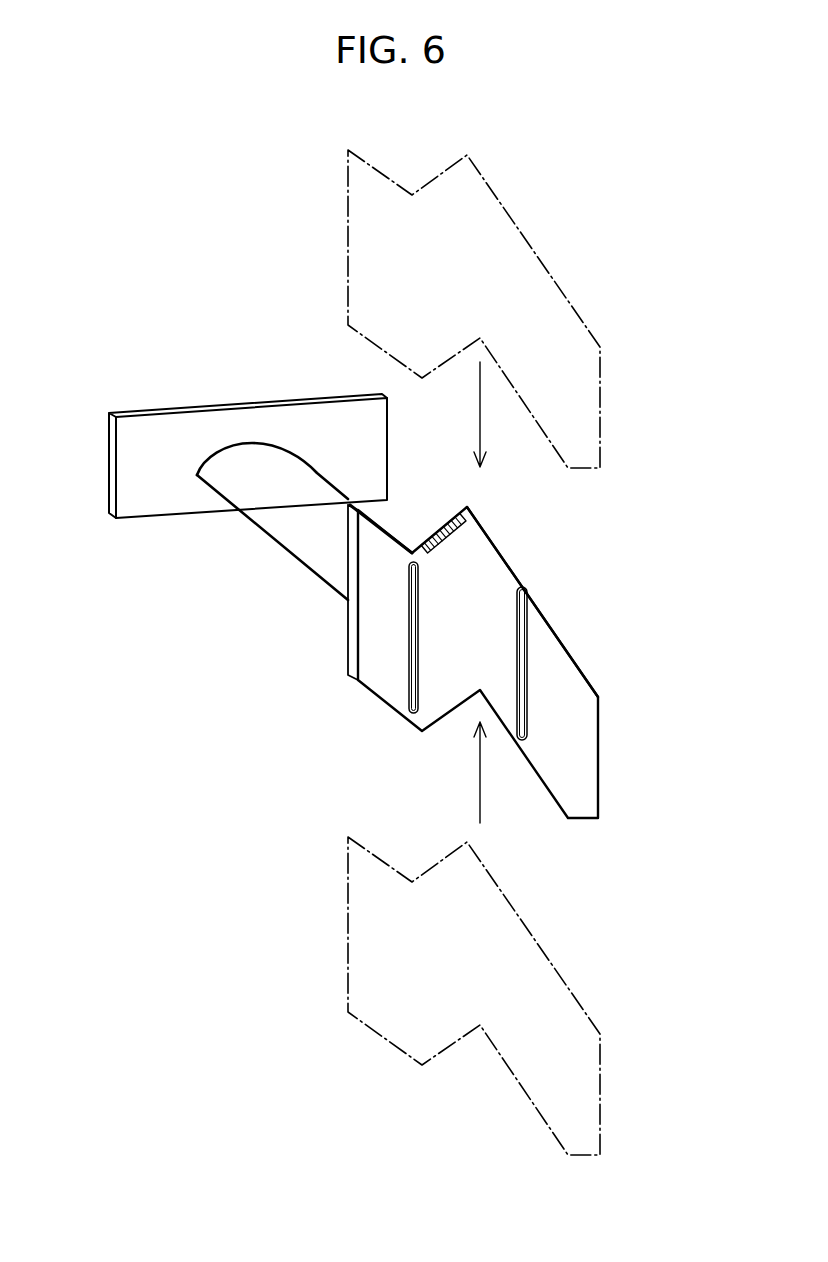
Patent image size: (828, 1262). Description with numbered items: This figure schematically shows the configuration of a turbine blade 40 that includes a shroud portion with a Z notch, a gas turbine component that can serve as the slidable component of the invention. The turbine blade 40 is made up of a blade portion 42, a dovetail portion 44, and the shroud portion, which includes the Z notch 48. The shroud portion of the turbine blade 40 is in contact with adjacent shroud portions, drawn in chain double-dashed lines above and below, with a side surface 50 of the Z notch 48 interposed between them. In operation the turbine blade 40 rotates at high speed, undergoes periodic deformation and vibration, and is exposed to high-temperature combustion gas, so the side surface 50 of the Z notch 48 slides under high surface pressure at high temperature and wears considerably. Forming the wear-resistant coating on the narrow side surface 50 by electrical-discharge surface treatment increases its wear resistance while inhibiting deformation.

The turbine blade 40 is at (277, 653).
The blade portion 42 is at (298, 562).
The dovetail portion 44 is at (160, 410).
The Z notch 48 is at (498, 563).
The side surface 50 is at (447, 517).